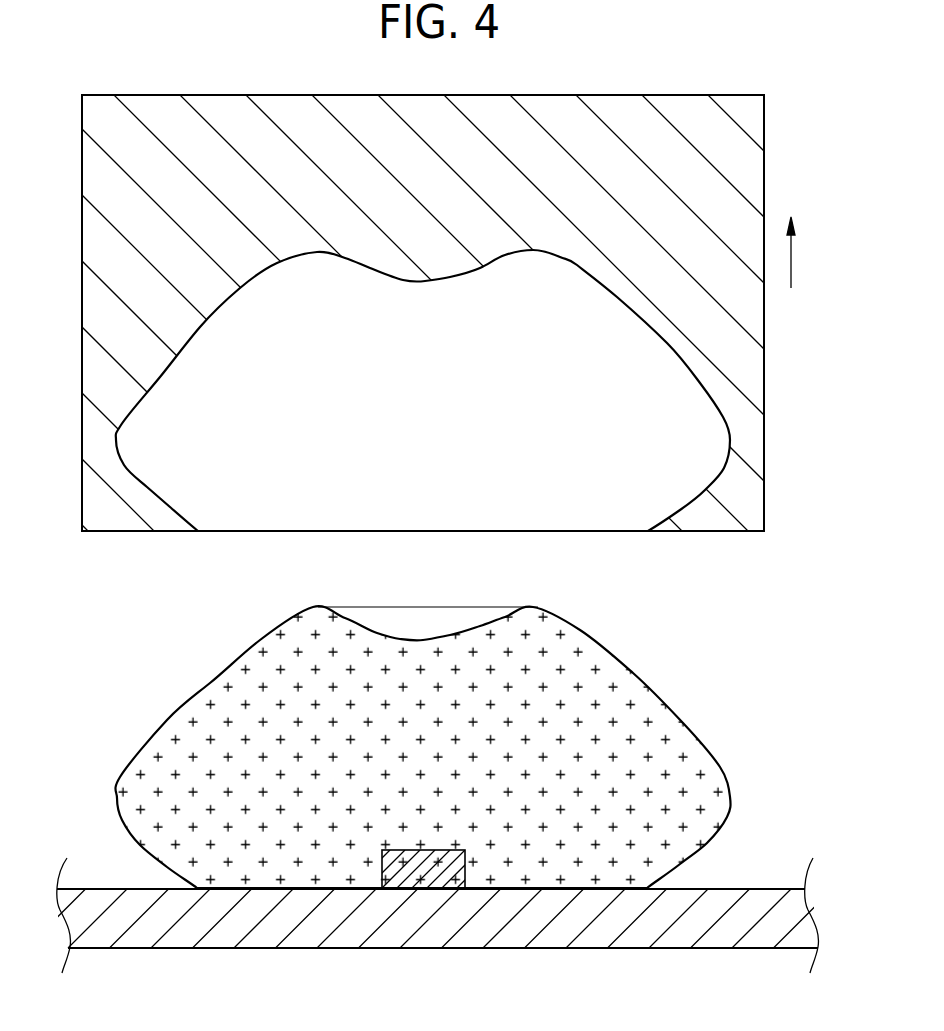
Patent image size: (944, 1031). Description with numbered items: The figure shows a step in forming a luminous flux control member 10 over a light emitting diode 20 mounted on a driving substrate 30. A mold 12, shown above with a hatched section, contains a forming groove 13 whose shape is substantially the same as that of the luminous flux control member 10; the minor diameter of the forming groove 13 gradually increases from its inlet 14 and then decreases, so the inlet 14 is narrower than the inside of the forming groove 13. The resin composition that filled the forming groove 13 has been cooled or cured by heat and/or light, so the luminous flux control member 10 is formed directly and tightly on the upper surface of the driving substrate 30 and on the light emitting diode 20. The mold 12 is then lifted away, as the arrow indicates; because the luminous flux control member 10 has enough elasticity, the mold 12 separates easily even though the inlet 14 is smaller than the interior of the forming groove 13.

The luminous flux control member 10 is at (703, 792).
The mold 12 is at (733, 157).
The forming groove 13 is at (530, 452).
The inlet 14 is at (288, 531).
The light emitting diode 20 is at (425, 870).
The driving substrate 30 is at (512, 933).